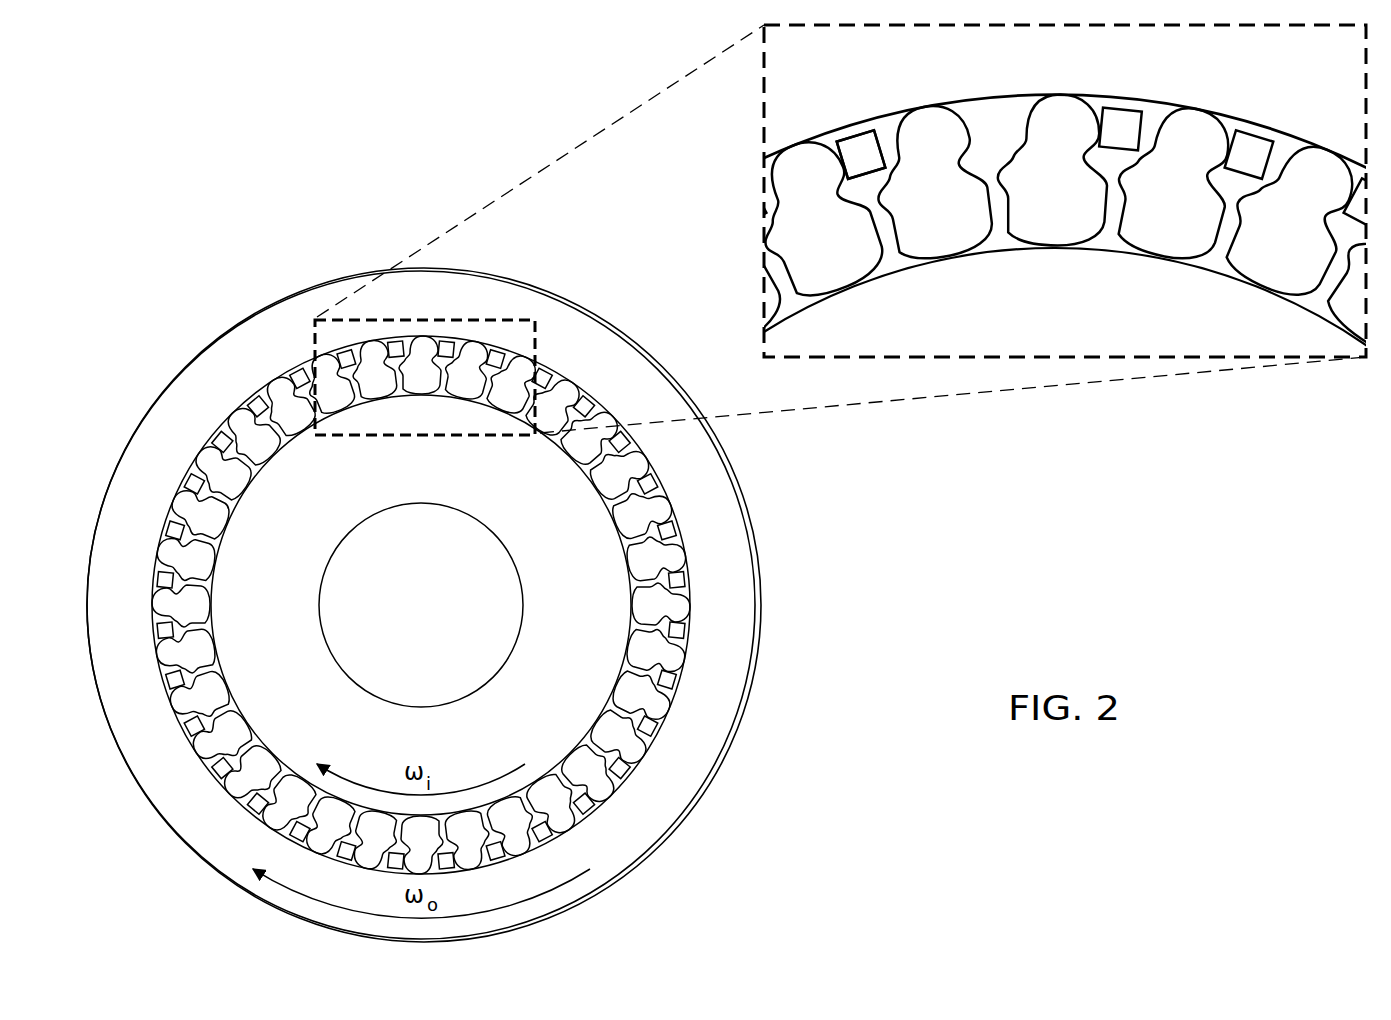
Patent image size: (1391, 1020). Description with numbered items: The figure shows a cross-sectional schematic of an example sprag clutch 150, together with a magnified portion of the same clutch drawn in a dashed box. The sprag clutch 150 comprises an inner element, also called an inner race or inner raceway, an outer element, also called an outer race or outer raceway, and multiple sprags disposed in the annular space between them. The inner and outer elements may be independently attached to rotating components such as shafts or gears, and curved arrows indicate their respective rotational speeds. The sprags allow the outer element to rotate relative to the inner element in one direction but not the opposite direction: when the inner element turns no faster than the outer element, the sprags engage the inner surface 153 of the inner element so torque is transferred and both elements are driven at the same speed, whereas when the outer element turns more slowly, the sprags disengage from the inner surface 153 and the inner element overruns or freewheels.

The sprag clutch 150 is at (246, 275).
The inner surface 153 is at (1124, 260).